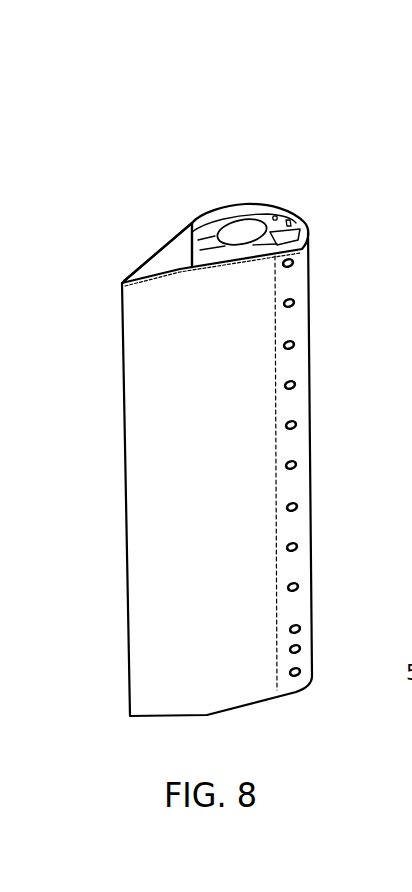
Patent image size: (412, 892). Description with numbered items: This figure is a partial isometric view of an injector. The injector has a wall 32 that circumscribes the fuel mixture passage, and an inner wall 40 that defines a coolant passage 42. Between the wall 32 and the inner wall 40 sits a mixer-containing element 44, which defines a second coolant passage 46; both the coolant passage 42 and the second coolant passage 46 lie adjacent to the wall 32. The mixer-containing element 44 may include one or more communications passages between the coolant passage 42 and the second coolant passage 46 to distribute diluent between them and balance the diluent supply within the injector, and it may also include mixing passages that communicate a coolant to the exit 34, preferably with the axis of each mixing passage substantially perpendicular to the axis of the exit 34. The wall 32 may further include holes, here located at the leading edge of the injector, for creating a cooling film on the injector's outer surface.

The wall 32 is at (165, 560).
The exit 34 is at (296, 342).
The inner wall 40 is at (273, 215).
The coolant passage 42 is at (170, 258).
The mixer-containing element 44 is at (208, 226).
The second coolant passage 46 is at (299, 218).